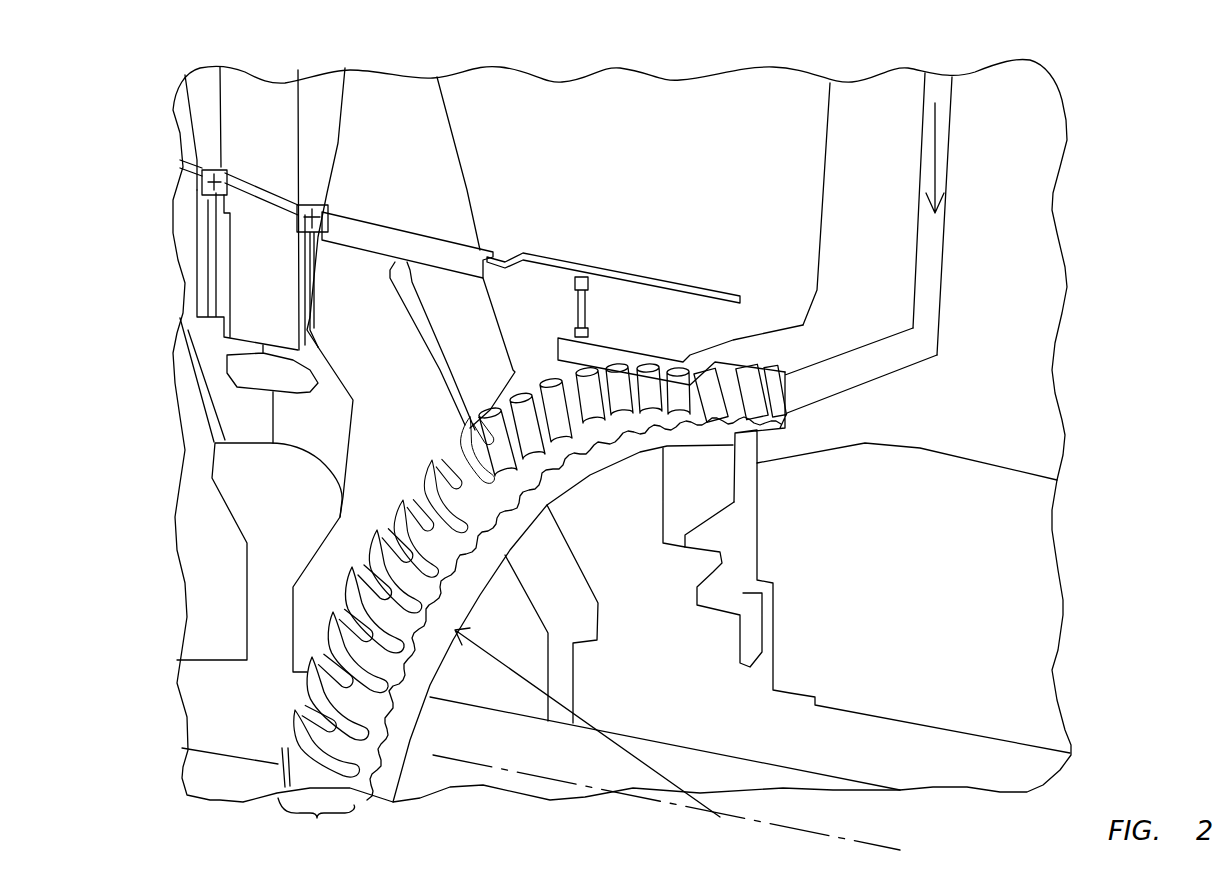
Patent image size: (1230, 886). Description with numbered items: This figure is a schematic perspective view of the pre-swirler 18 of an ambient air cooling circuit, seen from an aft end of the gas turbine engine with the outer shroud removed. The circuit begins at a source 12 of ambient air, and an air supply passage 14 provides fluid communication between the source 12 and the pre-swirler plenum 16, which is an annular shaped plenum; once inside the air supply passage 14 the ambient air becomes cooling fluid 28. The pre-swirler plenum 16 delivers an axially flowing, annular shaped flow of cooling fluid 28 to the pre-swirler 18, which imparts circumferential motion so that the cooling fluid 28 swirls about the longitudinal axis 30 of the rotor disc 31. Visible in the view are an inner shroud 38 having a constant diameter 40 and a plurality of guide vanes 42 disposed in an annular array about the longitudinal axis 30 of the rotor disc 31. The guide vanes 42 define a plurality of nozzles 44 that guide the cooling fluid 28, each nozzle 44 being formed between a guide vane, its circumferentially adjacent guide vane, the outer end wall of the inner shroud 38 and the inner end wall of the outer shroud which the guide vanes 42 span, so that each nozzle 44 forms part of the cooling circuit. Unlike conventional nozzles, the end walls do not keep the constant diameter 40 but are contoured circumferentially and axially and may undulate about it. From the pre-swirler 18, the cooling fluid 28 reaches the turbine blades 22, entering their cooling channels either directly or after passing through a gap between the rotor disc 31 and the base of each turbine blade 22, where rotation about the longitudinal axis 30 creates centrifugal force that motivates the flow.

The source of ambient air 12 is at (980, 59).
The air supply passage 14 is at (913, 233).
The pre-swirler plenum 16 is at (523, 530).
The pre-swirler 18 is at (317, 818).
The turbine blades 22 is at (382, 144).
The cooling fluid 28 is at (930, 168).
The longitudinal axis 30 is at (748, 818).
The rotor disc 31 is at (467, 311).
The inner shroud 38 is at (423, 718).
The constant diameter 40 is at (633, 756).
The guide vanes 42 is at (323, 725).
The nozzles 44 is at (460, 443).